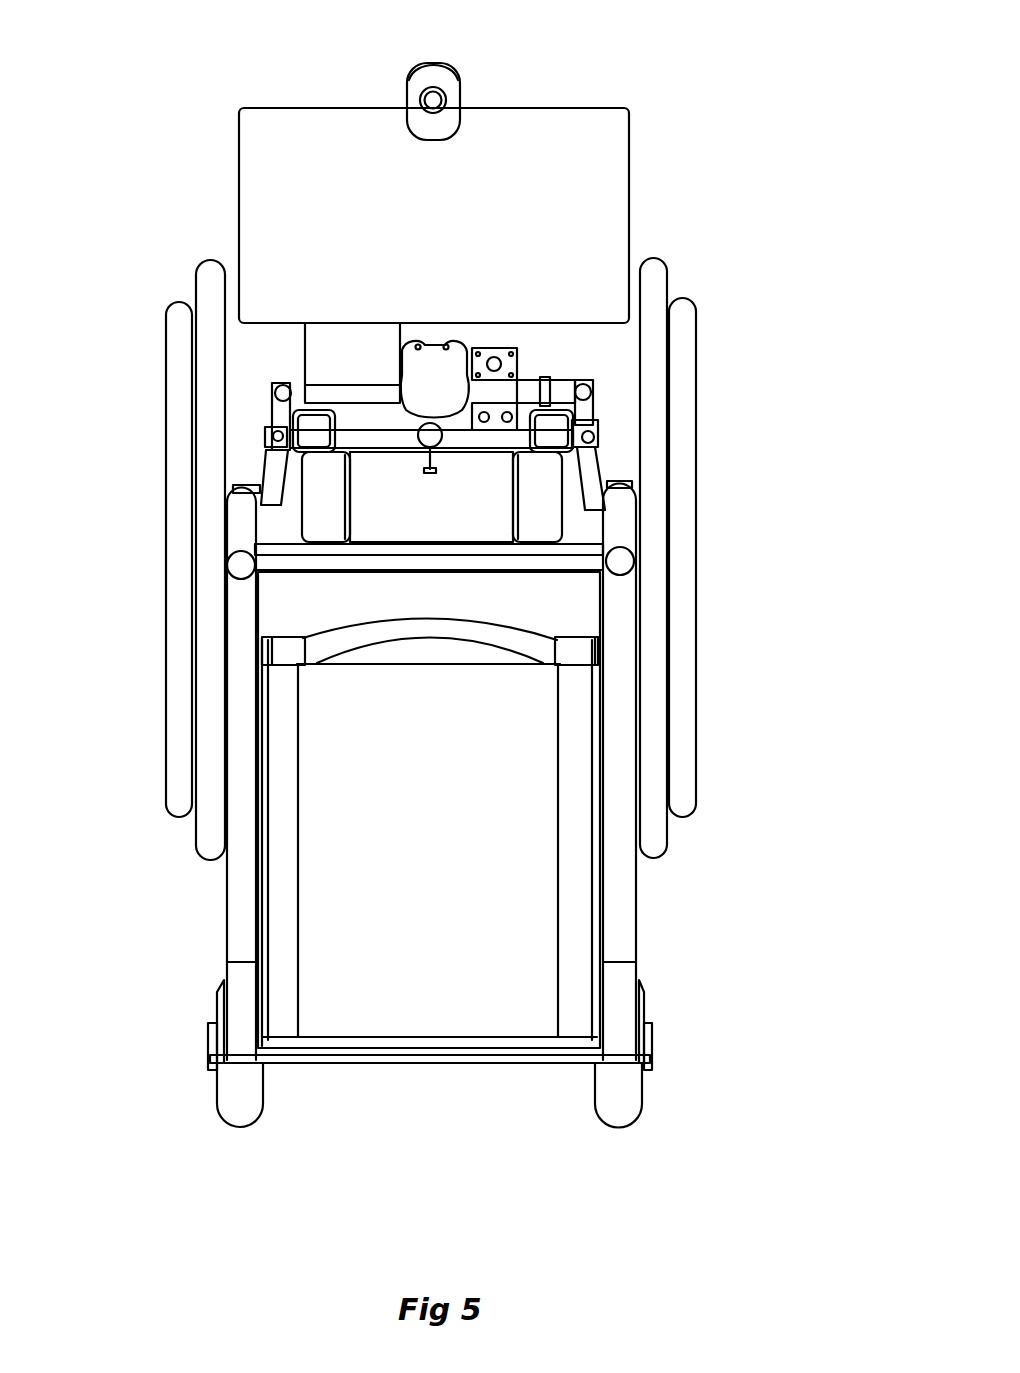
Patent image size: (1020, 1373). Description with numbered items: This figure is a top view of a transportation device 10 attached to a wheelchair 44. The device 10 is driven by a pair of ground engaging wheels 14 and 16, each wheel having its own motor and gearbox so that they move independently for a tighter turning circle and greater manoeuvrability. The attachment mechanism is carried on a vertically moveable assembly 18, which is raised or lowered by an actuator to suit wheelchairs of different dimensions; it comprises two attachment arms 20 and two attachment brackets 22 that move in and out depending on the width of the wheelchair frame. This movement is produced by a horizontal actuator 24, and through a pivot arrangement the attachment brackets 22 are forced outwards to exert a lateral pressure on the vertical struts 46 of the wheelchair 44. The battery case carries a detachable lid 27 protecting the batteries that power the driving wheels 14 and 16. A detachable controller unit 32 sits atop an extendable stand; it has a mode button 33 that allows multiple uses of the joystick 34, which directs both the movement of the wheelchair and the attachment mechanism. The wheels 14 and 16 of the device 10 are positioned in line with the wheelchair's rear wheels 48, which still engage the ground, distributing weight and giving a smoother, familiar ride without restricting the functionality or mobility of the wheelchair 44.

The transportation device 10 is at (663, 170).
The ground engaging wheel 14 is at (323, 527).
The ground engaging wheel 16 is at (540, 522).
The vertically moveable assembly 18 is at (350, 428).
The attachment arm 20 is at (288, 447).
The attachment bracket 22 is at (243, 485).
The horizontal actuator 24 is at (333, 360).
The detachable lid 27 is at (390, 252).
The controller unit 32 is at (460, 103).
The mode button 33 is at (422, 63).
The joystick 34 is at (445, 93).
The wheelchair 44 is at (660, 942).
The vertical strut 46 is at (240, 507).
The rear wheel 48 is at (205, 494).